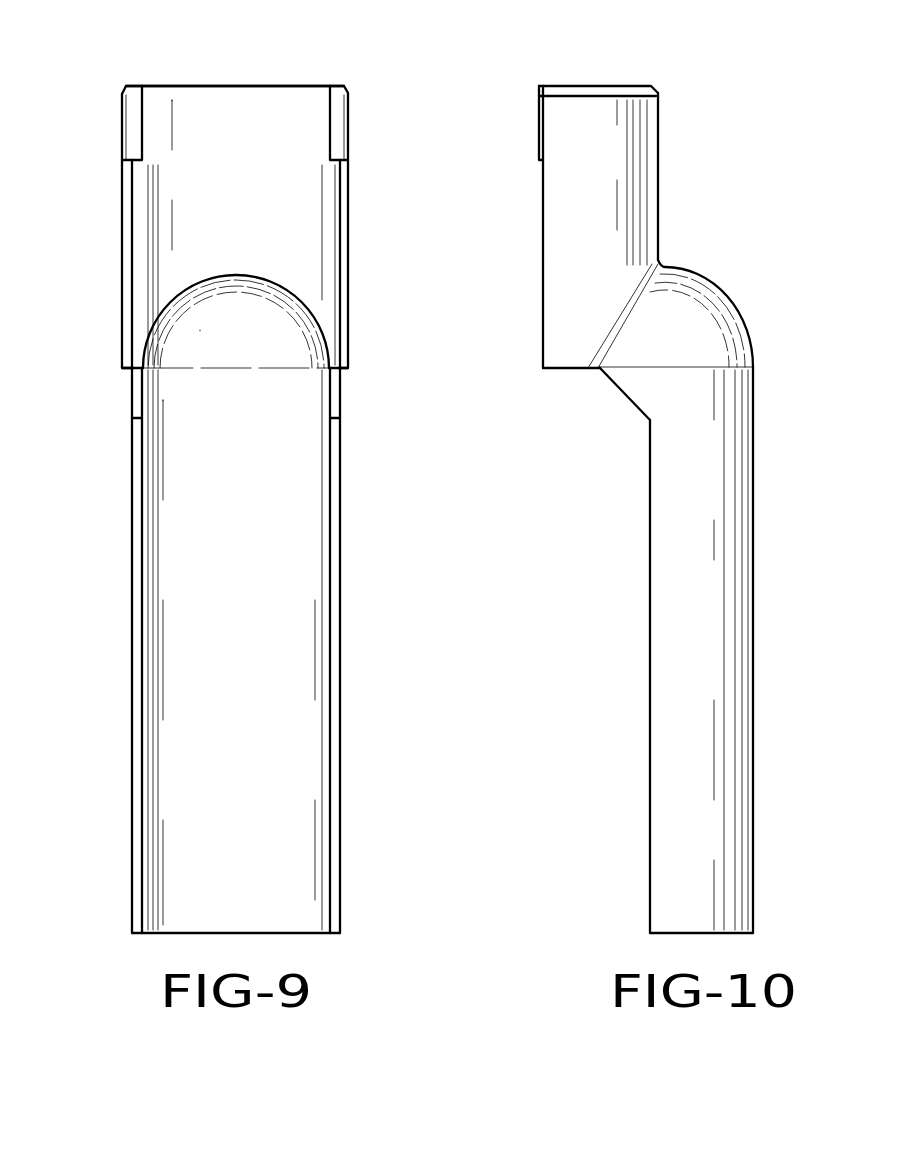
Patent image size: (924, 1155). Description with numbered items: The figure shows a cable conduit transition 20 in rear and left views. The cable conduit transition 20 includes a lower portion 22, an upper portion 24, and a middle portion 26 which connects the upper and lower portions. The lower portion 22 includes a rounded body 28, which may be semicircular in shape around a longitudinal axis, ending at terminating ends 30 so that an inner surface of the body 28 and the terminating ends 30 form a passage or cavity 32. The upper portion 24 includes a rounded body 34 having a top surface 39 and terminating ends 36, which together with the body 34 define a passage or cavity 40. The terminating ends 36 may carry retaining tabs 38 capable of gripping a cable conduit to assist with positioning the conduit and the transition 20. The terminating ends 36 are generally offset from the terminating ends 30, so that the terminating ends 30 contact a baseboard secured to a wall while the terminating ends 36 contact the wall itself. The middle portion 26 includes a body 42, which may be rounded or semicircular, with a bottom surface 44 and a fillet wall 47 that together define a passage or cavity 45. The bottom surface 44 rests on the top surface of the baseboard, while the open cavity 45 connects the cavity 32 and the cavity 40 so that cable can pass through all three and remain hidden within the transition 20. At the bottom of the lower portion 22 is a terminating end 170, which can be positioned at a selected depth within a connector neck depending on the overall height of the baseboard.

In FIG. 9, the cable conduit transition 20 is at (370, 640).
In FIG. 10, the cable conduit transition 20 is at (697, 122).
In FIG. 9, the lower portion 22 is at (257, 670).
In FIG. 10, the lower portion 22 is at (688, 658).
In FIG. 9, the upper portion 24 is at (224, 239).
In FIG. 10, the upper portion 24 is at (651, 214).
In FIG. 9, the middle portion 26 is at (236, 347).
In FIG. 10, the middle portion 26 is at (712, 301).
In FIG. 9, the rounded body 28 is at (352, 727).
In FIG. 10, the rounded body 28 is at (767, 610).
In FIG. 9, the terminating ends 30 is at (135, 580).
In FIG. 10, the terminating ends 30 is at (650, 802).
In FIG. 9, the cavity 32 is at (222, 632).
In FIG. 9, the rounded body 34 is at (112, 265).
In FIG. 10, the rounded body 34 is at (672, 176).
In FIG. 9, the terminating ends 36 is at (125, 225).
In FIG. 10, the terminating ends 36 is at (543, 293).
In FIG. 9, the retaining tabs 38 is at (130, 125).
In FIG. 10, the retaining tabs 38 is at (538, 108).
In FIG. 9, the top surface 39 is at (204, 85).
In FIG. 10, the top surface 39 is at (580, 85).
In FIG. 9, the cavity 40 is at (245, 140).
In FIG. 9, the body 42 is at (226, 352).
In FIG. 10, the body 42 is at (718, 265).
In FIG. 9, the bottom surface 44 is at (125, 372).
In FIG. 10, the bottom surface 44 is at (567, 368).
In FIG. 9, the cavity 45 is at (258, 327).
In FIG. 9, the fillet wall 47 is at (130, 403).
In FIG. 10, the fillet wall 47 is at (630, 400).
In FIG. 9, the terminating end 170 is at (155, 933).
In FIG. 10, the terminating end 170 is at (652, 933).